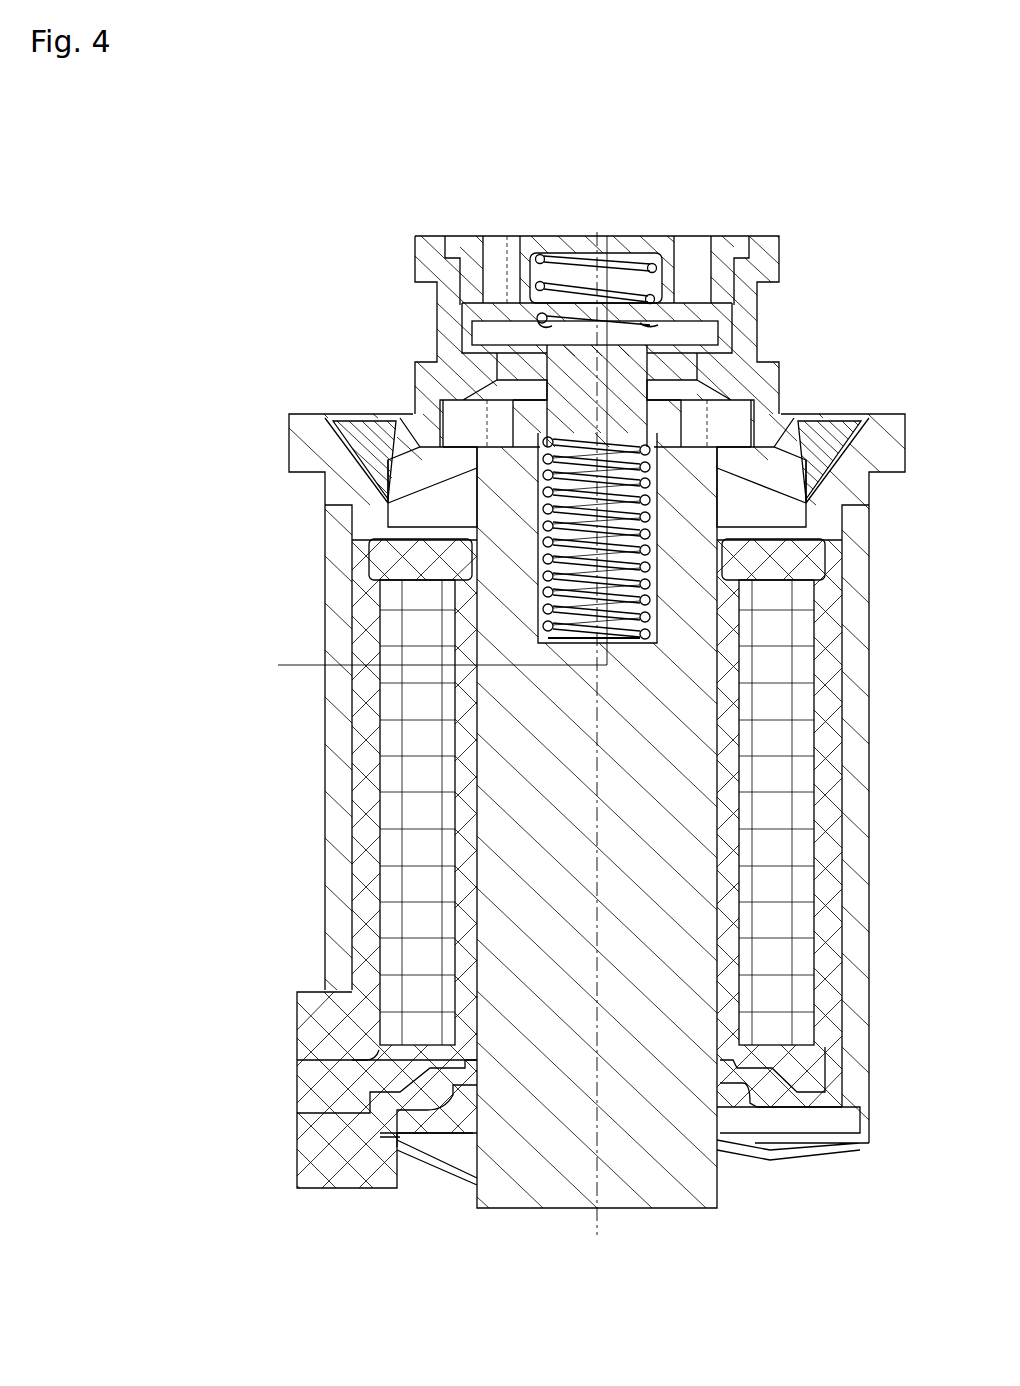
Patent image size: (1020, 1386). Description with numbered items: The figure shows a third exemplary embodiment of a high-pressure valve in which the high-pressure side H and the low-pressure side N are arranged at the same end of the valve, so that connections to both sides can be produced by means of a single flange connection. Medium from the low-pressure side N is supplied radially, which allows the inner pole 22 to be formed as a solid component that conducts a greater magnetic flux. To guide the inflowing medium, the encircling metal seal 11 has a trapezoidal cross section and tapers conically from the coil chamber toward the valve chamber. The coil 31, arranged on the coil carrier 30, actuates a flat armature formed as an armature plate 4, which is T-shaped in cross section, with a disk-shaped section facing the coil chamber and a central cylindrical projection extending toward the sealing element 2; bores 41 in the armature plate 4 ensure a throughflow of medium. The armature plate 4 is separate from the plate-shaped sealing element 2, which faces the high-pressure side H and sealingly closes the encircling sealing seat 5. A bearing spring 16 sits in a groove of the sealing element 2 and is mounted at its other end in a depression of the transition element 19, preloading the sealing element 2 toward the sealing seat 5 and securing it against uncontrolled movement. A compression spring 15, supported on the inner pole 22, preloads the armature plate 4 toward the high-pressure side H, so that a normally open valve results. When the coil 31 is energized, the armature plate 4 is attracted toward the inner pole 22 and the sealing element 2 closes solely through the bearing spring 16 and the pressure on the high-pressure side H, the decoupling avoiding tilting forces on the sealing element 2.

The sealing element 2 is at (413, 236).
The armature plate 4 is at (463, 353).
The sealing seat 5 is at (518, 352).
The metal seal 11 is at (445, 505).
The compression spring 15 is at (540, 598).
The bearing spring 16 is at (575, 256).
The transition element 19 is at (715, 240).
The inner pole 22 is at (555, 735).
The coil carrier 30 is at (450, 843).
The coil 31 is at (430, 775).
The bores 41 is at (390, 432).
The high-pressure side H is at (507, 236).
The low-pressure side N is at (351, 413).